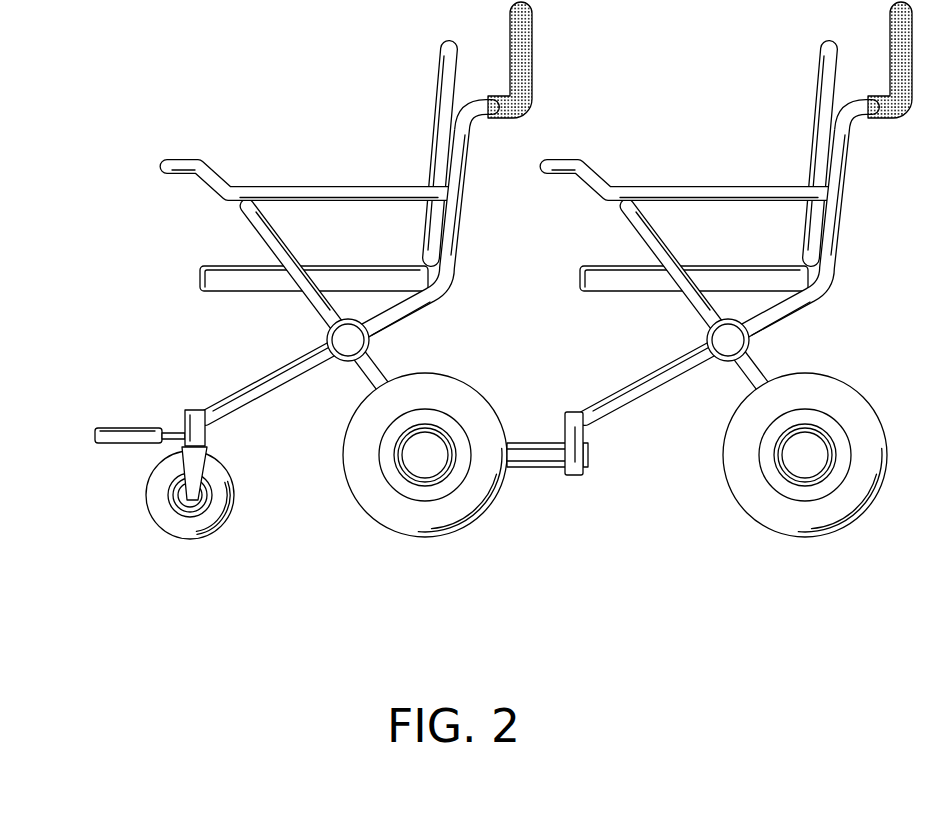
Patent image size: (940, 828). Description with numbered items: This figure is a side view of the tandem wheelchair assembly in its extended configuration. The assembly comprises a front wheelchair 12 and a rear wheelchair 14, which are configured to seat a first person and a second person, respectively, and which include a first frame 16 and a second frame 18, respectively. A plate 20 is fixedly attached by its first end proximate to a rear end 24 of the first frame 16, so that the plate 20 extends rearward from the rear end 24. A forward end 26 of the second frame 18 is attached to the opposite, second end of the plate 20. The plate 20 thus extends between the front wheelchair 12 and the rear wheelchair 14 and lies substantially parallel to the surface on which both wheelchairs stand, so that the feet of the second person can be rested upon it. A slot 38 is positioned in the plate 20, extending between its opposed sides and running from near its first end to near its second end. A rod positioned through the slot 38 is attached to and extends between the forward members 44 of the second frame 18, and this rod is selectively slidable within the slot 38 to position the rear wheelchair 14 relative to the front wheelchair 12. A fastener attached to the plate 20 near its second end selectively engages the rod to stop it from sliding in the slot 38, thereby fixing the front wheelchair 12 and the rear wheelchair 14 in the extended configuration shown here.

The front wheelchair 12 is at (313, 315).
The rear wheelchair 14 is at (729, 316).
The first frame 16 is at (400, 303).
The second frame 18 is at (805, 471).
The plate 20 is at (563, 474).
The rear end 24 is at (435, 293).
The forward end 26 is at (576, 476).
The slot 38 is at (545, 455).
The forward members 44 is at (656, 440).